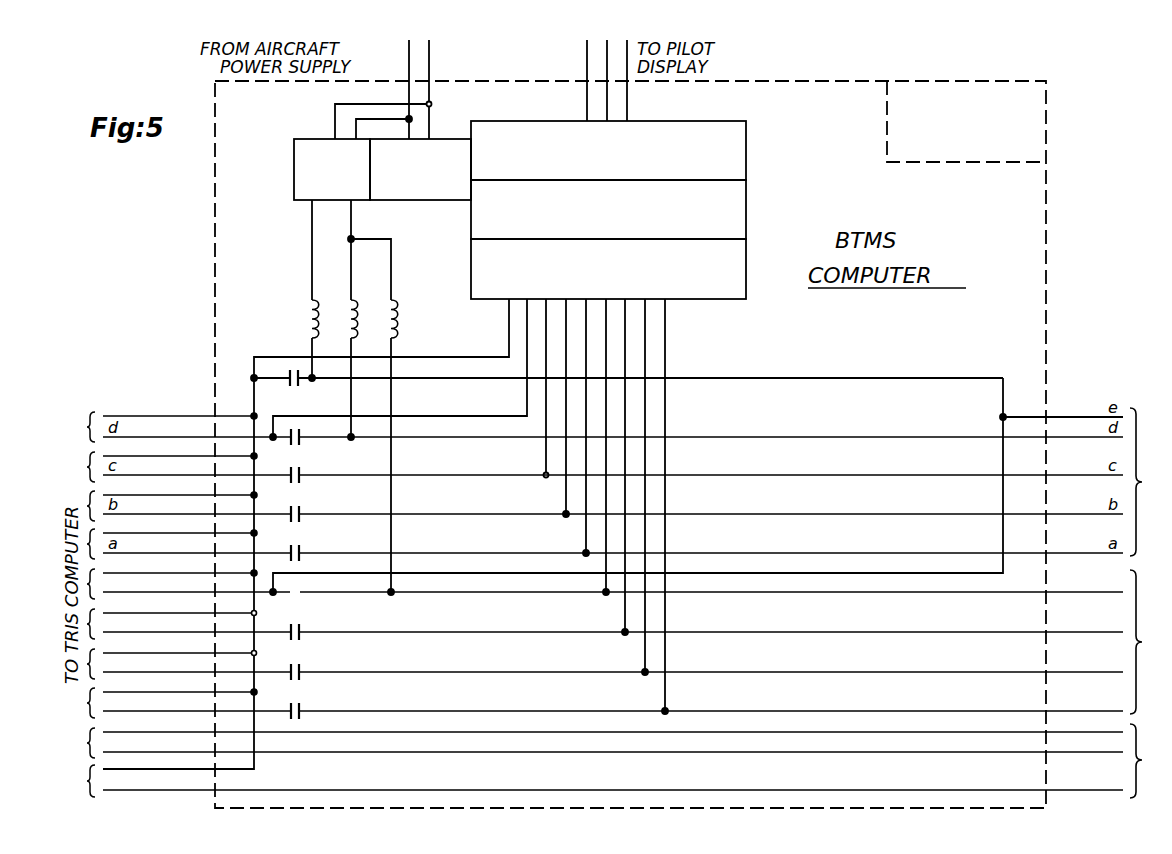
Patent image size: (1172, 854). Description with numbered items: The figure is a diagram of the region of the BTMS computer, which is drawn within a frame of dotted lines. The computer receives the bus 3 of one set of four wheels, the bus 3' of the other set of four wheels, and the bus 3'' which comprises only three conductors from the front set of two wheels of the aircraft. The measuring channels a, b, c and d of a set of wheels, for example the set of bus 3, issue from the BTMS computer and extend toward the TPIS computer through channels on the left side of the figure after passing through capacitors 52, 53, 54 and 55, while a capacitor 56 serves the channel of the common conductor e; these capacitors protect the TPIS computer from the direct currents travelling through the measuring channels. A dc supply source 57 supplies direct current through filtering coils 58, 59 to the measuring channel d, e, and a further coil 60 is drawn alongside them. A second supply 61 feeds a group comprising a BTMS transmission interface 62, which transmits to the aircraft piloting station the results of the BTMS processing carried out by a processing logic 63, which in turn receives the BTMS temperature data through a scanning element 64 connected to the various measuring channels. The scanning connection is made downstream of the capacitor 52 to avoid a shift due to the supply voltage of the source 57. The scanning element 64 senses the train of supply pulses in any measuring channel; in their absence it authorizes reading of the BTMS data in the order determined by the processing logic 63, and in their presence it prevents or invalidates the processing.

The bus 3 is at (1145, 482).
The bus 3' is at (1148, 642).
The bus 3'' is at (1151, 761).
The capacitor 52 is at (301, 440).
The capacitor 53 is at (301, 478).
The capacitor 54 is at (301, 517).
The capacitor 55 is at (301, 556).
The capacitor 56 is at (292, 385).
The dc supply source 57 is at (300, 185).
The filtering coil 58 is at (308, 318).
The filtering coil 59 is at (346, 320).
The inductor 60 is at (396, 320).
The second supply 61 is at (436, 201).
The BTMS transmission interface 62 is at (567, 127).
The processing logic 63 is at (733, 207).
The scanning element 64 is at (735, 283).